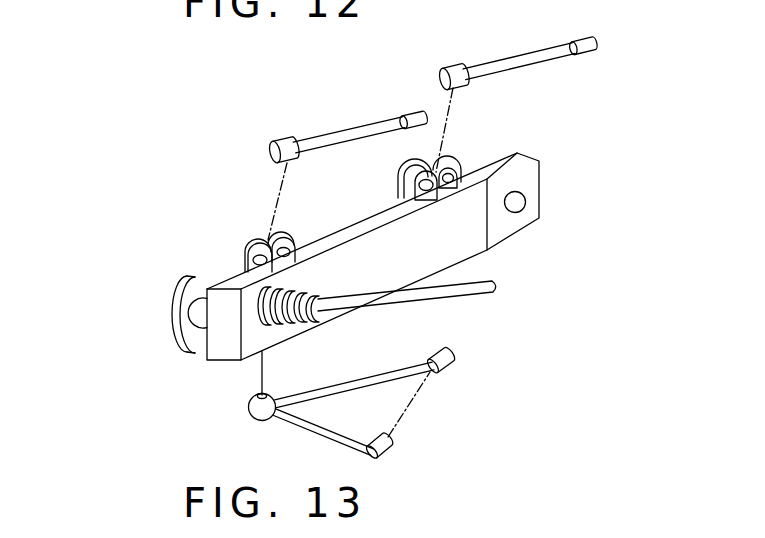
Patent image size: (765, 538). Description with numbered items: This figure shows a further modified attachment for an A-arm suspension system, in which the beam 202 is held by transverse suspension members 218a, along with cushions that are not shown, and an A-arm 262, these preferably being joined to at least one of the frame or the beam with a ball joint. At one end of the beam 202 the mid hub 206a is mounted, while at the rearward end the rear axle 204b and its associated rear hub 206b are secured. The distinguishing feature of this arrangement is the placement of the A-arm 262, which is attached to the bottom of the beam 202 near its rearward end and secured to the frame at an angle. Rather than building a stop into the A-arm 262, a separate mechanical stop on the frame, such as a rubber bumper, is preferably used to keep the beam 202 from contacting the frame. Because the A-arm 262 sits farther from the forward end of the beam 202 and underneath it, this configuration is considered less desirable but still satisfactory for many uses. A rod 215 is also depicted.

The beam 202 is at (470, 237).
The rear axle 204b is at (197, 318).
The mid hub 206a is at (420, 162).
The rear hub 206b is at (185, 296).
The spring rod 215 is at (453, 293).
The transverse suspension member 218a is at (352, 127).
The A-arm 262 is at (418, 450).